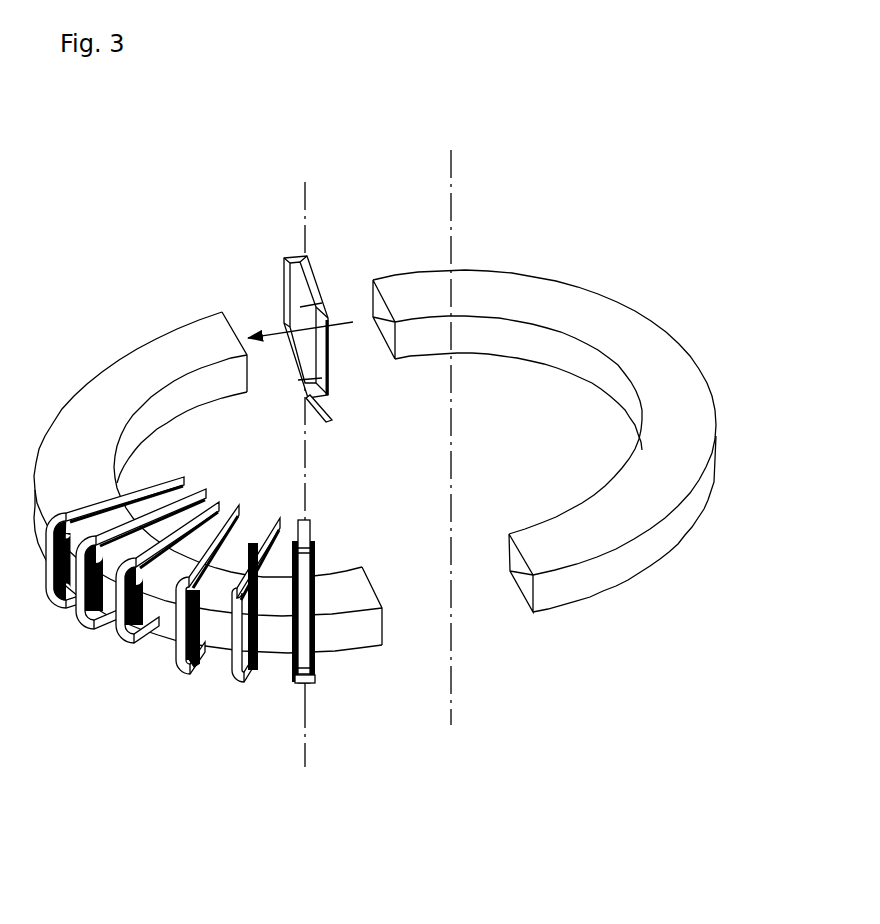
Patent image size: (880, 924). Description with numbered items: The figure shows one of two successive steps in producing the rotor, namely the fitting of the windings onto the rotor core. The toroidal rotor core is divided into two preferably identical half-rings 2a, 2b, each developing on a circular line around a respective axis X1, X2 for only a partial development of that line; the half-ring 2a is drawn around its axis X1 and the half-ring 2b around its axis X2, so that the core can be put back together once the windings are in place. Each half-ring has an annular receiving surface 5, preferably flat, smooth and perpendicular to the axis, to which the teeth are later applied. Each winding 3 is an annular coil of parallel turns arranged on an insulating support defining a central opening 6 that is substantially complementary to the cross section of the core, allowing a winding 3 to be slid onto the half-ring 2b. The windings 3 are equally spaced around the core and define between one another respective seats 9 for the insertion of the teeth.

The half-ring 2a is at (653, 317).
The half-ring 2b is at (87, 375).
The winding 3 is at (173, 645).
The receiving surface 5 is at (172, 353).
The central opening 6 is at (285, 303).
The seat 9 is at (277, 675).
The axis X1 is at (453, 693).
The axis X2 is at (307, 745).